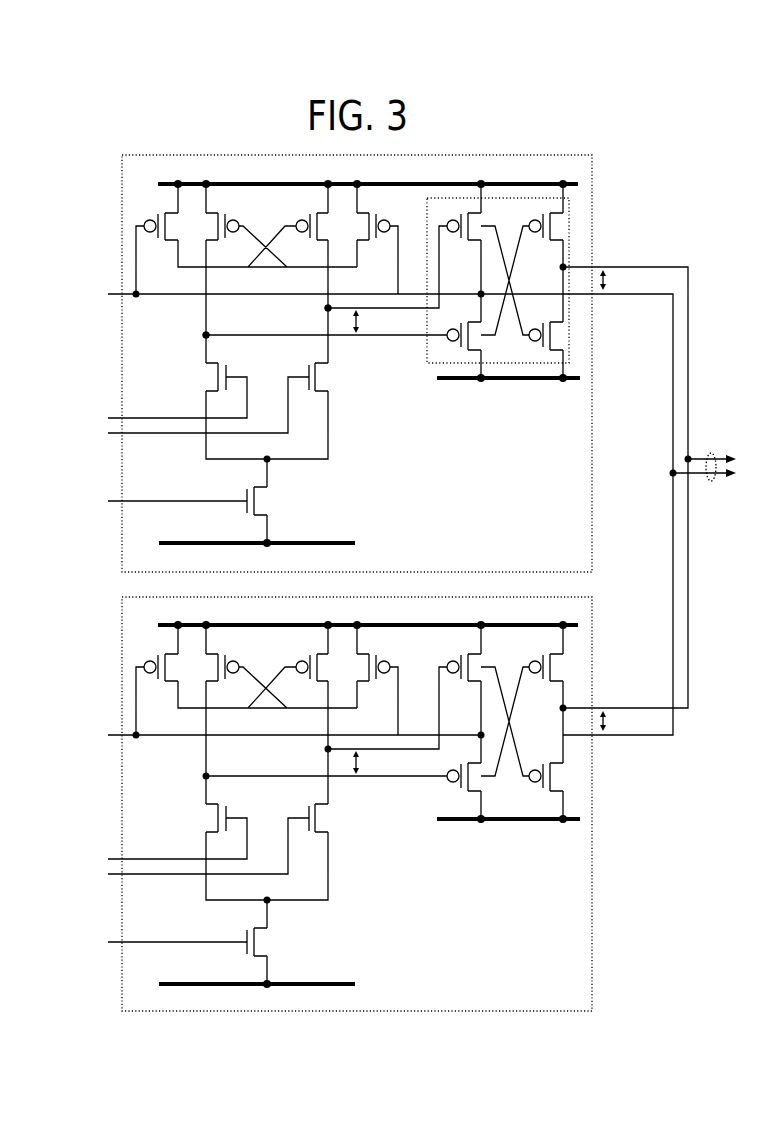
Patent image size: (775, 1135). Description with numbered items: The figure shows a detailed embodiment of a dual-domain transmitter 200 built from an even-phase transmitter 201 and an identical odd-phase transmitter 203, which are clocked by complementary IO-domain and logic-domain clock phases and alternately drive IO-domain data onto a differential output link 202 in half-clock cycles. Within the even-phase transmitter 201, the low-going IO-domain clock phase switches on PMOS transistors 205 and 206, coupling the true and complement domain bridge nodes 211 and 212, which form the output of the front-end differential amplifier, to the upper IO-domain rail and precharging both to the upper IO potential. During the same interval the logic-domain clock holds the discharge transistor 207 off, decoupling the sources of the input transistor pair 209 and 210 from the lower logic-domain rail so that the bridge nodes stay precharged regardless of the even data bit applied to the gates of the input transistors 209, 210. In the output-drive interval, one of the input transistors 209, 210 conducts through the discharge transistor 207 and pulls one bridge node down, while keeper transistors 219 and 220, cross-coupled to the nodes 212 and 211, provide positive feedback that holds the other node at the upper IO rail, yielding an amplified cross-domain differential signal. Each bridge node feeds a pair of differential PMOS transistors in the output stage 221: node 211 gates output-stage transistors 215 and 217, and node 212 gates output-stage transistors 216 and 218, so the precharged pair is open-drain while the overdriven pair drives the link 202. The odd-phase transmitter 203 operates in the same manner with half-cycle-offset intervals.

The dual-domain transmitter 200 is at (508, 122).
The even-phase transmitter 201 is at (372, 445).
The differential output link 202 is at (710, 453).
The odd-phase transmitter 203 is at (353, 804).
The PMOS transistor 205 is at (378, 216).
The PMOS transistor 206 is at (158, 244).
The discharge transistor 207 is at (270, 501).
The input transistor 209 is at (331, 379).
The input transistor 210 is at (205, 378).
The domain bridge node 211 is at (325, 323).
The domain bridge node 212 is at (203, 324).
The output-stage transistor 215 is at (466, 243).
The output-stage transistor 216 is at (467, 319).
The output-stage transistor 217 is at (530, 341).
The output-stage transistor 218 is at (528, 220).
The keeper transistor 219 is at (311, 213).
The keeper transistor 220 is at (224, 214).
The output stage 221 is at (426, 349).